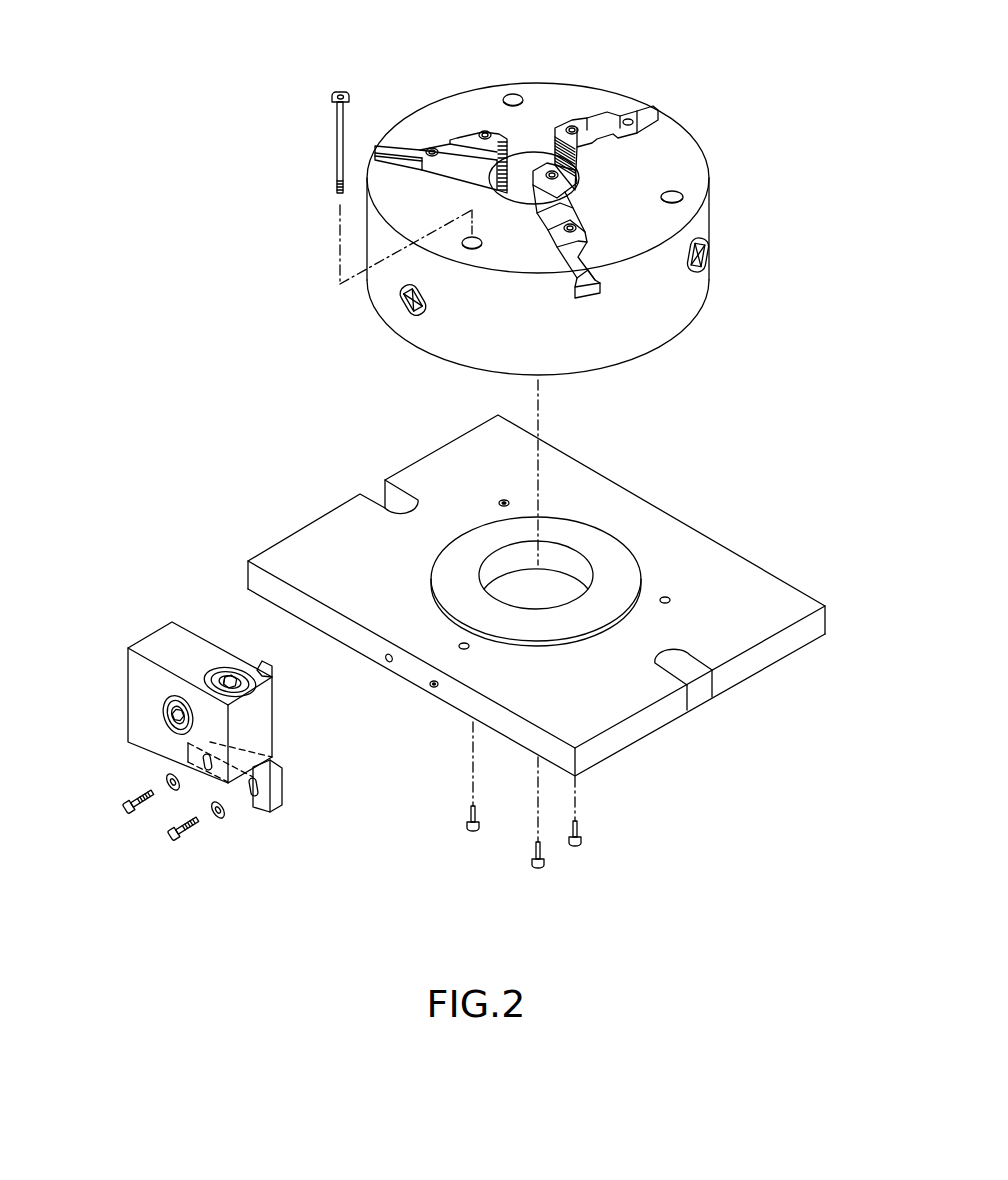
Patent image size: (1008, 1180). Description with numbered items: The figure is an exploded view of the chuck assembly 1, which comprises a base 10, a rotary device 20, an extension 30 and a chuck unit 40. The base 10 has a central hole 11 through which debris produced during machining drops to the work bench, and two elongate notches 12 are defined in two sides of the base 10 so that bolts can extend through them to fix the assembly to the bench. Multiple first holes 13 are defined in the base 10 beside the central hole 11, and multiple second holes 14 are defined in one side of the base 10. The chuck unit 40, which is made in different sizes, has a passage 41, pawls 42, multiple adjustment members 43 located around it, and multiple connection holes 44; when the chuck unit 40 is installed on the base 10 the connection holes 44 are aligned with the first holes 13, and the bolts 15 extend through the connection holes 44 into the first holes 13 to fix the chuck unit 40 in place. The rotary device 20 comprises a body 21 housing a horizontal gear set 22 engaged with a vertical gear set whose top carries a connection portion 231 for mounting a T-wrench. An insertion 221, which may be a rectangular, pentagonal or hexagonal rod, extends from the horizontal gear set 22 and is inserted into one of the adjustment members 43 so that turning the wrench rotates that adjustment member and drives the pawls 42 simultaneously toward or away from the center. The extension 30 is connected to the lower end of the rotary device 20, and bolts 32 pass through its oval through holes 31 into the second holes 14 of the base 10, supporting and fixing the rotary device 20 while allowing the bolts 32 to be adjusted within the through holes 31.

The chuck assembly 1 is at (300, 465).
The base 10 is at (712, 518).
The central hole 11 is at (550, 590).
The elongate notches 12 is at (683, 662).
The first holes 13 is at (500, 500).
The second holes 14 is at (432, 688).
The bolts 15 is at (340, 143).
The rotary device 20 is at (153, 628).
The body 21 is at (128, 673).
The horizontal gear set 22 is at (167, 713).
The insertion 221 is at (270, 657).
The connection portion 231 is at (228, 670).
The extension 30 is at (282, 807).
The through holes 31 is at (253, 797).
The bolts 32 is at (214, 836).
The chuck unit 40 is at (707, 140).
The passage 41 is at (532, 162).
The pawls 42 is at (472, 148).
The adjustment members 43 is at (402, 298).
The connection holes 44 is at (465, 250).